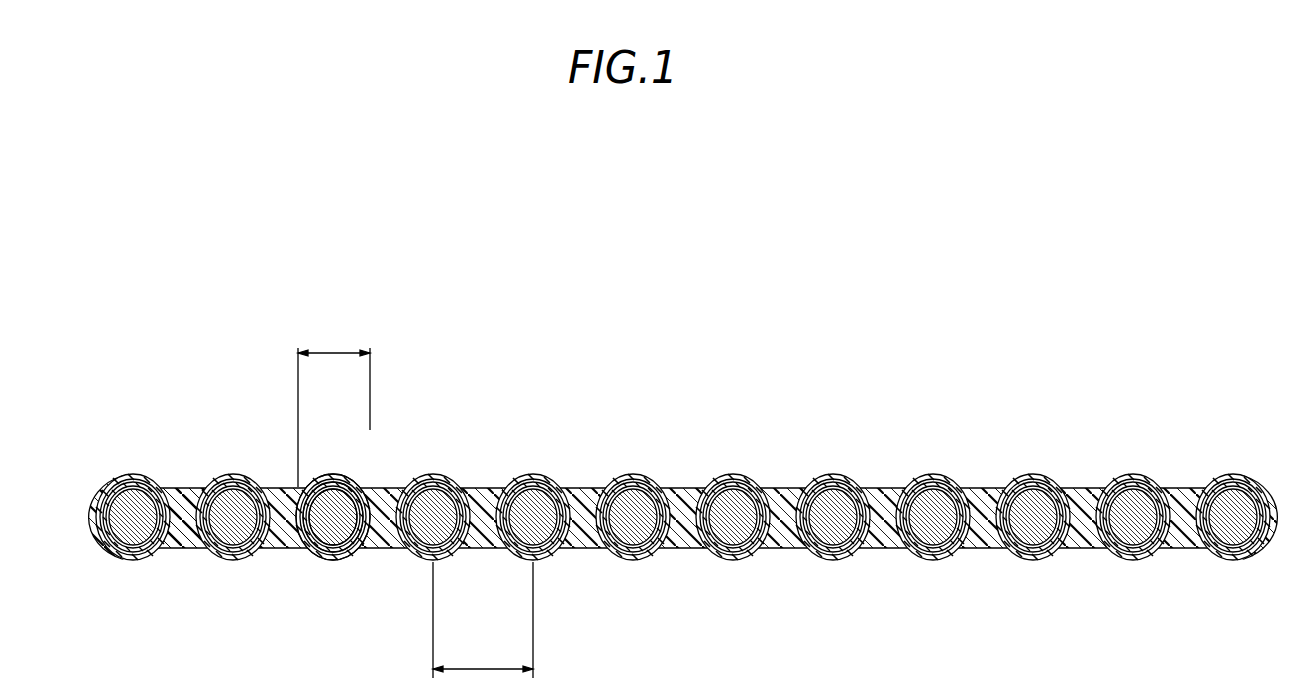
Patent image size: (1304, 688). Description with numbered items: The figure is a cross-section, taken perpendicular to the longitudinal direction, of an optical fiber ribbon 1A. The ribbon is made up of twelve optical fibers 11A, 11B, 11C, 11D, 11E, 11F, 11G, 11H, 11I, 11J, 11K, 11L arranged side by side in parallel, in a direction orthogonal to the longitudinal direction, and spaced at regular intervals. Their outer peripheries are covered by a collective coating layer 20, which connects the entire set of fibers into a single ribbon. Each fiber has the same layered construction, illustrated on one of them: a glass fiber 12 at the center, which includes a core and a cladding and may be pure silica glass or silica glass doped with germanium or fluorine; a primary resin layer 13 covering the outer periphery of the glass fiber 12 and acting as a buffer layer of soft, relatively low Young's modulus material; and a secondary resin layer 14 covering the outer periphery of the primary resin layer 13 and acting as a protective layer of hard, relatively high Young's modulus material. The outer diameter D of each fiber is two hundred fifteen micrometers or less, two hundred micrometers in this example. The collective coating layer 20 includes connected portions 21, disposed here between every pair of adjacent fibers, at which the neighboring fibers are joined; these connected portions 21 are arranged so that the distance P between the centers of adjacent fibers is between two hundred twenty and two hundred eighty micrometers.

The optical fiber ribbon 1A is at (678, 436).
The optical fiber 11A is at (133, 471).
The optical fiber 11B is at (233, 471).
The optical fiber 11C is at (333, 507).
The optical fiber 11D is at (433, 471).
The optical fiber 11E is at (533, 471).
The optical fiber 11F is at (633, 471).
The optical fiber 11G is at (733, 471).
The optical fiber 11H is at (833, 471).
The optical fiber 11I is at (933, 471).
The optical fiber 11J is at (1033, 471).
The optical fiber 11K is at (1133, 471).
The optical fiber 11L is at (1228, 471).
The glass fiber 12 is at (326, 526).
The primary resin layer 13 is at (330, 553).
The secondary resin layer 14 is at (357, 557).
The collective coating layer 20 is at (117, 560).
The connected portion 21 is at (175, 549).
The outer diameter D is at (334, 407).
The distance between centers P is at (483, 625).